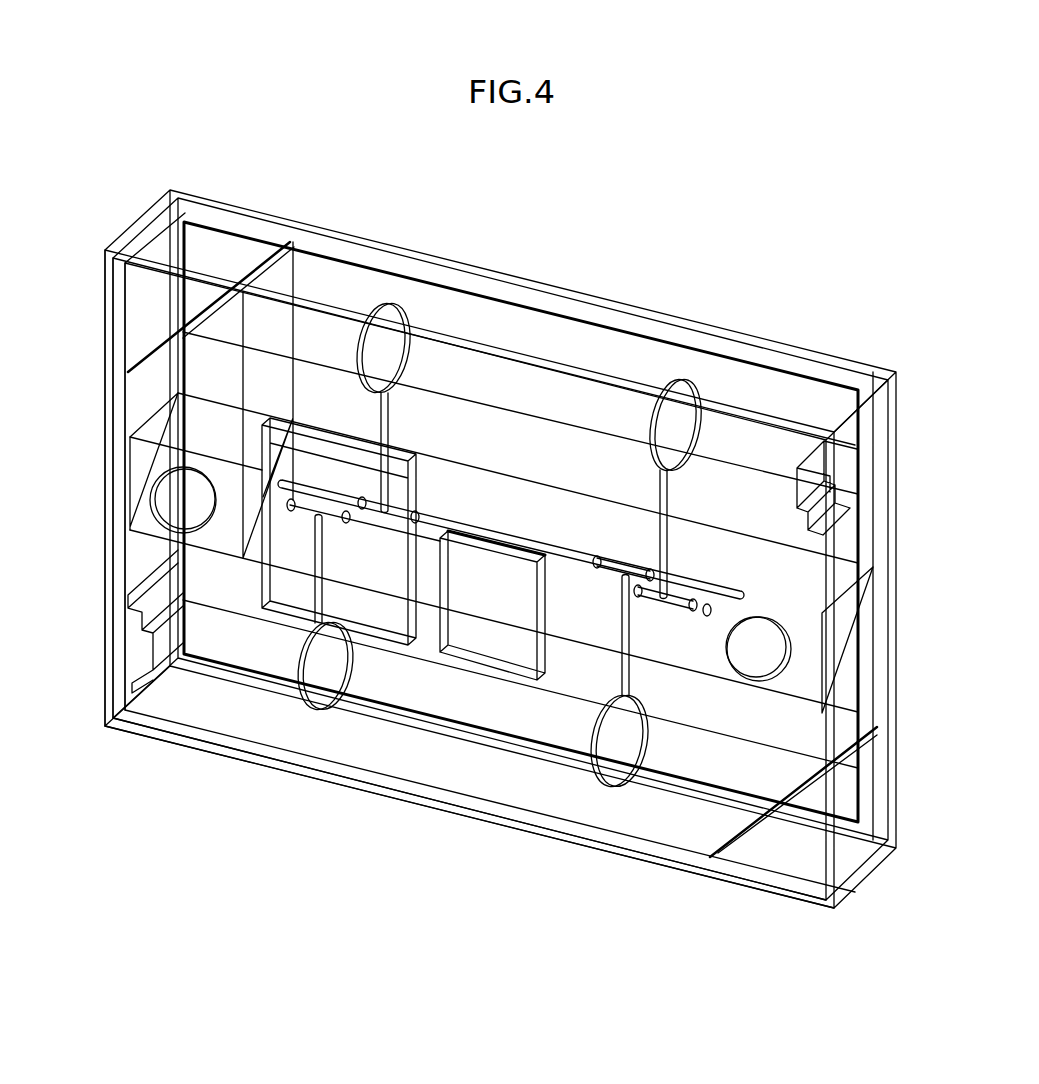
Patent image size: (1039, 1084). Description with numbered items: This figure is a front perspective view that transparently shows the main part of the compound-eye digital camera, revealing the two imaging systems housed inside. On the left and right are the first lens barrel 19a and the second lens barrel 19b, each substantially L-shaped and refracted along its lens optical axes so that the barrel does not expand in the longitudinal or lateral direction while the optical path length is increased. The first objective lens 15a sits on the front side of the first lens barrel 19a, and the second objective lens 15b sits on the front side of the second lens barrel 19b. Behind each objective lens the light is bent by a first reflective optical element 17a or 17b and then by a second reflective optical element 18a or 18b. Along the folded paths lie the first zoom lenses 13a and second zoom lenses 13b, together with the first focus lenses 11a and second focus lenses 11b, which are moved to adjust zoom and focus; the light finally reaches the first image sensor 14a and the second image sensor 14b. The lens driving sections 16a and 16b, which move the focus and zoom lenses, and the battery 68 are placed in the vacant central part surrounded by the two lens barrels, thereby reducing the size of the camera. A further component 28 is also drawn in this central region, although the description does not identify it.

The first focus lenses 11a is at (695, 382).
The second focus lenses 11b is at (307, 700).
The first zoom lenses 13a is at (400, 313).
The second zoom lenses 13b is at (597, 790).
The first image sensor 14a is at (812, 476).
The second image sensor 14b is at (138, 655).
The first objective lens 15a is at (162, 497).
The second objective lens 15b is at (777, 662).
The lens driving section 16a is at (417, 513).
The lens driving section 16b is at (290, 508).
The first reflective optical element for the first imaging system 17a is at (157, 462).
The first reflective optical element for the second imaging system 17b is at (833, 664).
The second reflective optical element for the first imaging system 18a is at (250, 268).
The second reflective optical element for the second imaging system 18b is at (748, 833).
The first lens barrel 19a is at (137, 320).
The second lens barrel 19b is at (660, 833).
The circuit board 28 is at (492, 605).
The battery 68 is at (339, 531).